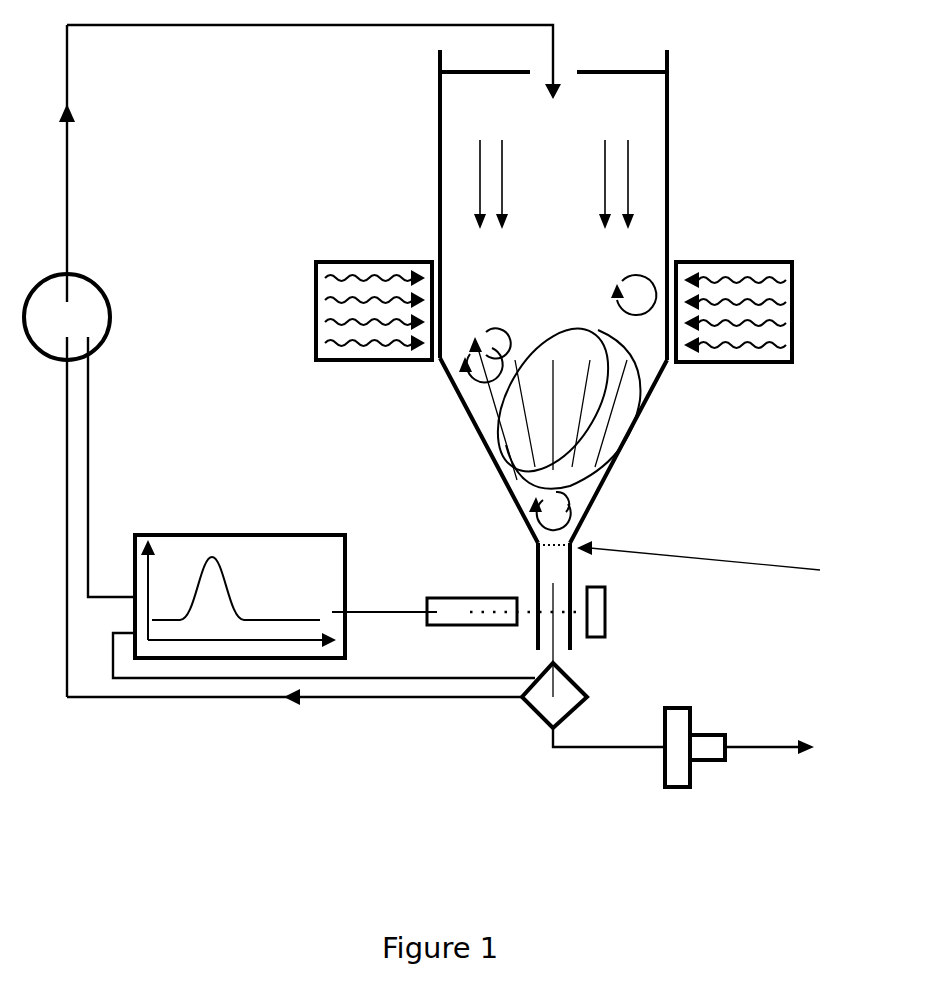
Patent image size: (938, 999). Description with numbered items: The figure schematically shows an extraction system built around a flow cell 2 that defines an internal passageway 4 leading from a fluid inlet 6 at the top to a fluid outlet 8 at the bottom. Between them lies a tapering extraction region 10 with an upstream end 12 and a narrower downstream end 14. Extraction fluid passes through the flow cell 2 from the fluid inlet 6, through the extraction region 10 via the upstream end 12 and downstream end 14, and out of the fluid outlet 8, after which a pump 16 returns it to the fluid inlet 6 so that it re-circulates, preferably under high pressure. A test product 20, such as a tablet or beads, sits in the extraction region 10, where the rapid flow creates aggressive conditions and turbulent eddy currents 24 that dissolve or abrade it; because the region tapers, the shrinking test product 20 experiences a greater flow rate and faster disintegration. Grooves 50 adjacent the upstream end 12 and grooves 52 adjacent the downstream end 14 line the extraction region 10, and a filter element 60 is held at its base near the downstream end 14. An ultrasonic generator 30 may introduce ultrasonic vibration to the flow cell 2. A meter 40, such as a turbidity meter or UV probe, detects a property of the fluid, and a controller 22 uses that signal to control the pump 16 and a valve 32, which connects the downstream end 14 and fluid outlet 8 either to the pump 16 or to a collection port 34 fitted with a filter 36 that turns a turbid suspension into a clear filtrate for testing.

The flow cell 2 is at (668, 153).
The internal passageway 4 is at (627, 110).
The fluid inlet 6 is at (568, 40).
The fluid outlet 8 is at (578, 658).
The extraction region 10 is at (485, 452).
The upstream end 12 is at (668, 365).
The downstream end 14 is at (572, 543).
The pump 16 is at (80, 308).
The test product 20 is at (600, 385).
The controller 22 is at (182, 535).
The turbulent eddy currents 24 is at (608, 268).
The ultrasonic generator 30 is at (780, 308).
The valve 32 is at (538, 718).
The collection port 34 is at (707, 747).
The filter 36 is at (678, 755).
The meter 40 is at (455, 636).
The first plurality of grooves 50 is at (492, 400).
The second plurality of grooves 52 is at (565, 507).
The filter element 60 is at (698, 566).